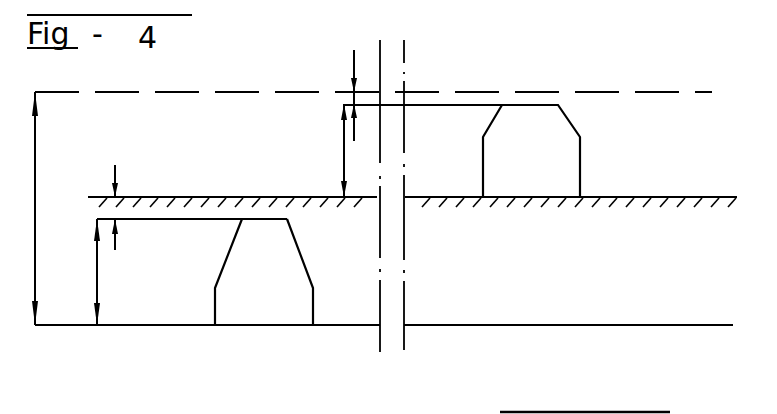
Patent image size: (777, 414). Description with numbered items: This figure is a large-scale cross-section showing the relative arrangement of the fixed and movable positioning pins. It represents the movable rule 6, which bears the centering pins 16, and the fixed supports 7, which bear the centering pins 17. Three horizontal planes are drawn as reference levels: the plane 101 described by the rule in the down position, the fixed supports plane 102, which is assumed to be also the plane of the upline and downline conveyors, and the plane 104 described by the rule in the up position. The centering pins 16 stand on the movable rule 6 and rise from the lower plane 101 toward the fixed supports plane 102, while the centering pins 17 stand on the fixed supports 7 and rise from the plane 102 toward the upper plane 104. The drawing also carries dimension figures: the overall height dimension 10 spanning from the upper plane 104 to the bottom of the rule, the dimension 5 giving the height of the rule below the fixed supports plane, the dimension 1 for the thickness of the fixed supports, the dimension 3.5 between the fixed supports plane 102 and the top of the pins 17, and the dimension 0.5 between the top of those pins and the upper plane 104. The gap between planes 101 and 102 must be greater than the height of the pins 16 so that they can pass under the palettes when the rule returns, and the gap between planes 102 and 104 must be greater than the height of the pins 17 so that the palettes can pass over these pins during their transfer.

The thickness dimension of ground plane layer 1 is at (115, 165).
The height dimension of lower level 5 is at (97, 268).
The movable rule 6 is at (174, 345).
The fixed support 7 is at (635, 243).
The overall height dimension 10 is at (36, 161).
The centering pins 16 is at (287, 297).
The centering pins 17 is at (525, 120).
The plane described by the rule in the down position 101 is at (192, 268).
The fixed supports plane 102 is at (412, 184).
The plane described by the rule in the up position 104 is at (375, 74).
The dimension 0.5 is at (352, 60).
The dimension 3.5 is at (344, 150).